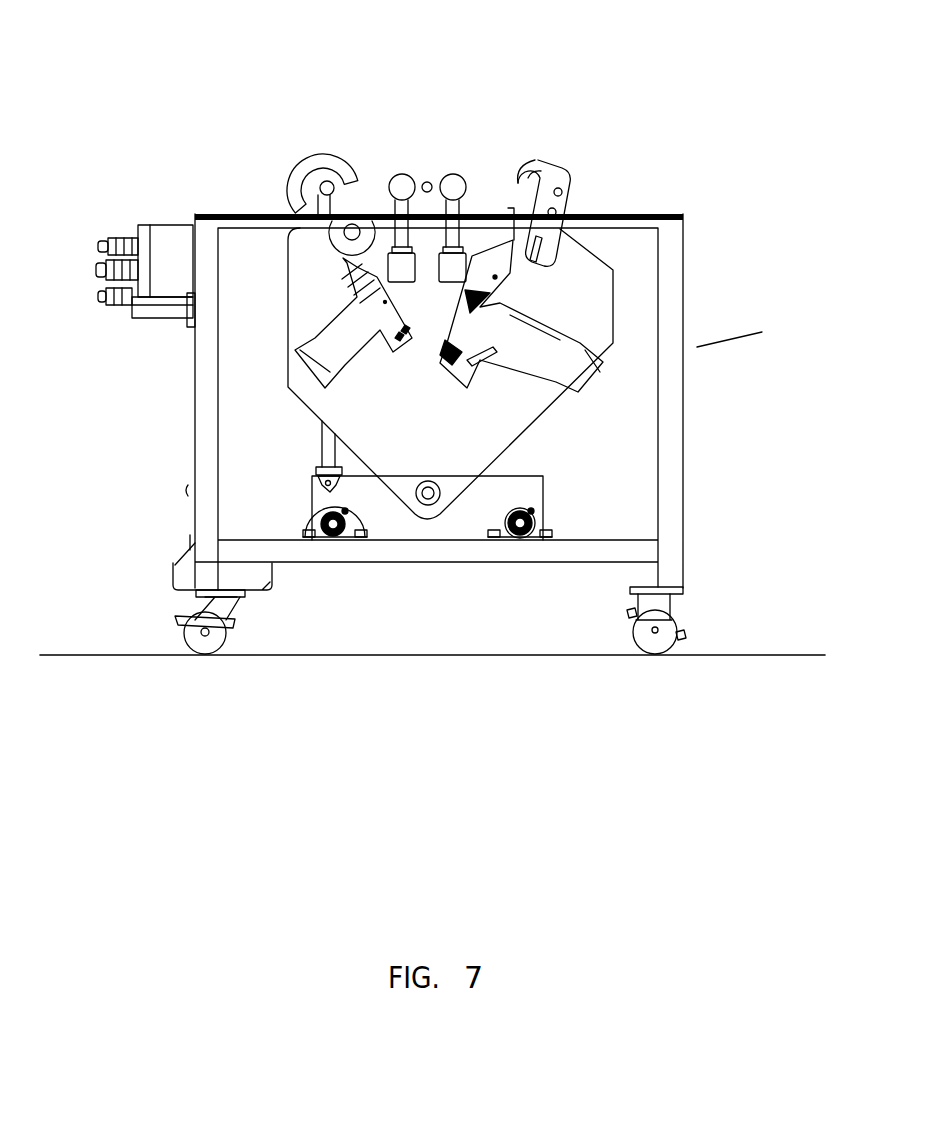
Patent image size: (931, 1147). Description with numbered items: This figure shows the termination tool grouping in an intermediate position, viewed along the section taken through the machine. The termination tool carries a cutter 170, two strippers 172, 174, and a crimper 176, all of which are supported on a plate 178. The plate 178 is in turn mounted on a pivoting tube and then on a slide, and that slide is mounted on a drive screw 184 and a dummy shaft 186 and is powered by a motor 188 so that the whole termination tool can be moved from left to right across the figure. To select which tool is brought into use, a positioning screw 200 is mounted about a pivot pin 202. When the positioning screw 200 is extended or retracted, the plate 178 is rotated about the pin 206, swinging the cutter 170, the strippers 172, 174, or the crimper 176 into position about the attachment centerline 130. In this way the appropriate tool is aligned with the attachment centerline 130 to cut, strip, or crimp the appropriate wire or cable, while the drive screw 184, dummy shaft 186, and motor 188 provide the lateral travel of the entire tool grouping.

The attachment centerline 130 is at (429, 182).
The cutter 170 is at (326, 150).
The stripper 172 is at (402, 174).
The stripper 174 is at (455, 174).
The crimper 176 is at (549, 160).
The plate 178 is at (598, 313).
The drive screw 184 is at (332, 540).
The dummy shaft 186 is at (533, 518).
The motor 188 is at (357, 523).
The positioning screw 200 is at (335, 458).
The pivot pin 202 is at (323, 482).
The pin 206 is at (516, 477).